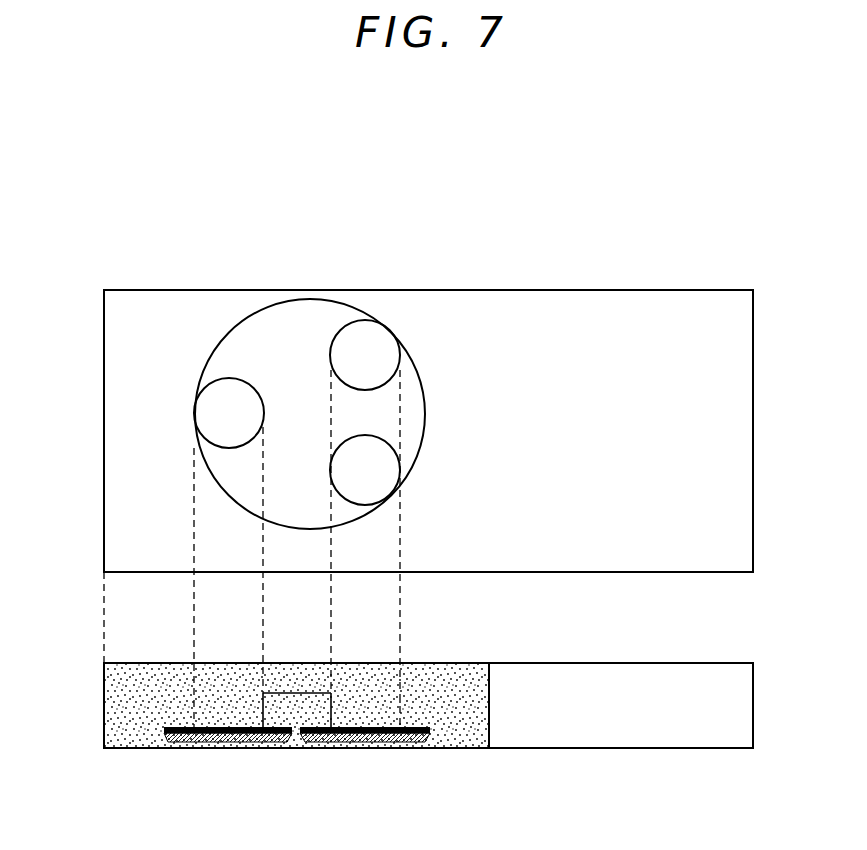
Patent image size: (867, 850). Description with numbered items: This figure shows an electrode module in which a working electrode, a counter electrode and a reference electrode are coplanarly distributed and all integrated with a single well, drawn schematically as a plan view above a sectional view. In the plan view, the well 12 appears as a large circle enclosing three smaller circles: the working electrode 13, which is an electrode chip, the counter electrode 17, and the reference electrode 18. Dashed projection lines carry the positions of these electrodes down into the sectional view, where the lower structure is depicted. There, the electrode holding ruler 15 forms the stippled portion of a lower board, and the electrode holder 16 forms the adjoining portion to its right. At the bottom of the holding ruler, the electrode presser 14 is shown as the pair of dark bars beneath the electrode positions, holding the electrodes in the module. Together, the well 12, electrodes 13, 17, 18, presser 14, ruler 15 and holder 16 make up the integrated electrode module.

The well 12 is at (298, 508).
The working electrode 13 is at (227, 450).
The electrode presser 14 is at (360, 743).
The electrode holding ruler 15 is at (103, 683).
The electrode holder 16 is at (543, 675).
The counter electrode 17 is at (350, 325).
The reference electrode 18 is at (363, 500).